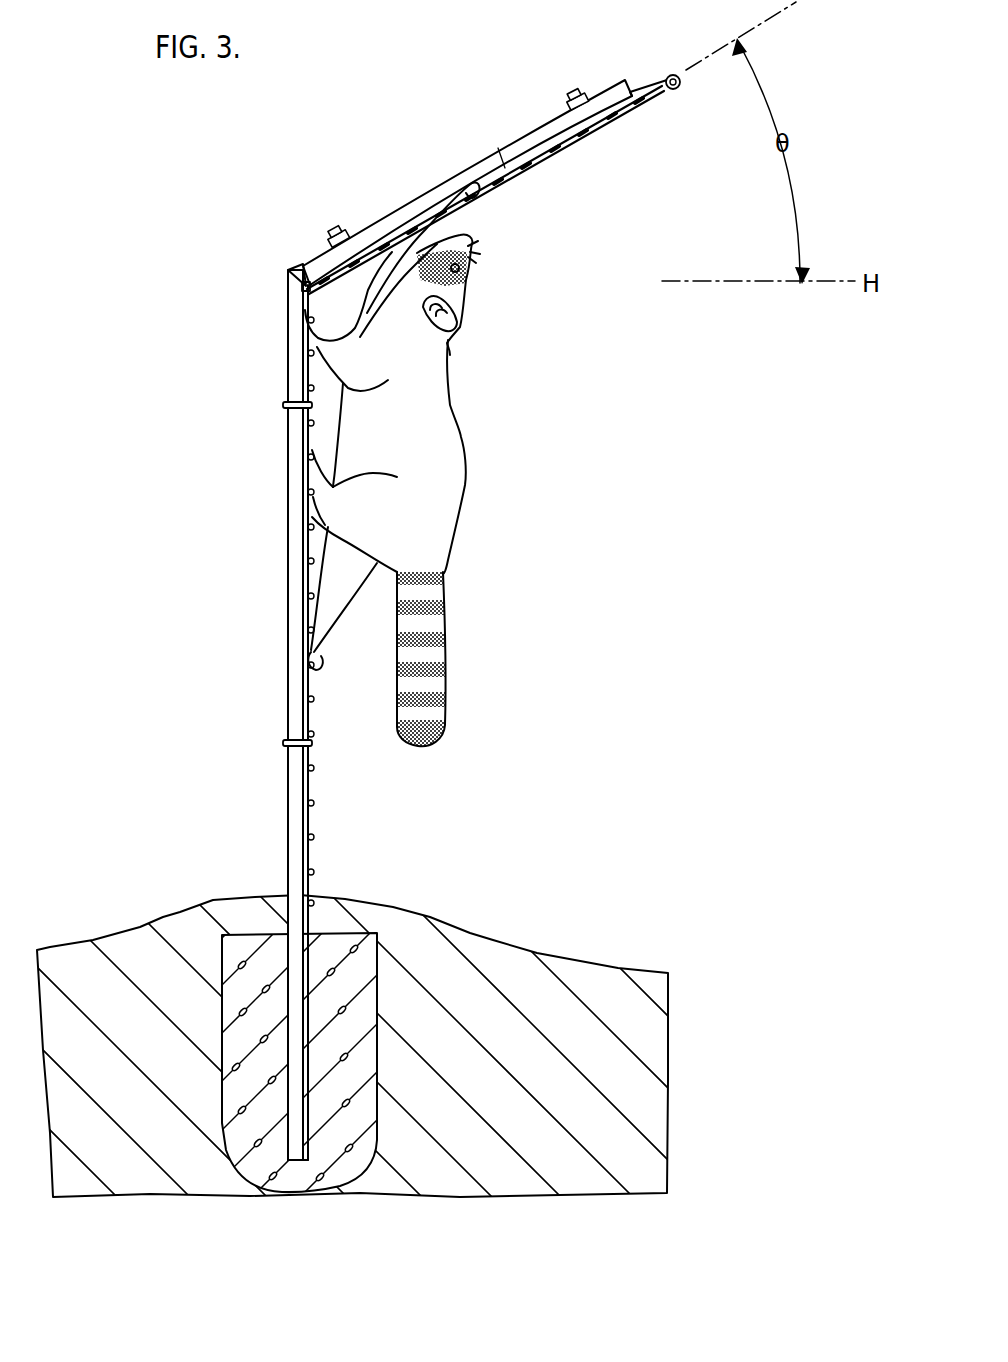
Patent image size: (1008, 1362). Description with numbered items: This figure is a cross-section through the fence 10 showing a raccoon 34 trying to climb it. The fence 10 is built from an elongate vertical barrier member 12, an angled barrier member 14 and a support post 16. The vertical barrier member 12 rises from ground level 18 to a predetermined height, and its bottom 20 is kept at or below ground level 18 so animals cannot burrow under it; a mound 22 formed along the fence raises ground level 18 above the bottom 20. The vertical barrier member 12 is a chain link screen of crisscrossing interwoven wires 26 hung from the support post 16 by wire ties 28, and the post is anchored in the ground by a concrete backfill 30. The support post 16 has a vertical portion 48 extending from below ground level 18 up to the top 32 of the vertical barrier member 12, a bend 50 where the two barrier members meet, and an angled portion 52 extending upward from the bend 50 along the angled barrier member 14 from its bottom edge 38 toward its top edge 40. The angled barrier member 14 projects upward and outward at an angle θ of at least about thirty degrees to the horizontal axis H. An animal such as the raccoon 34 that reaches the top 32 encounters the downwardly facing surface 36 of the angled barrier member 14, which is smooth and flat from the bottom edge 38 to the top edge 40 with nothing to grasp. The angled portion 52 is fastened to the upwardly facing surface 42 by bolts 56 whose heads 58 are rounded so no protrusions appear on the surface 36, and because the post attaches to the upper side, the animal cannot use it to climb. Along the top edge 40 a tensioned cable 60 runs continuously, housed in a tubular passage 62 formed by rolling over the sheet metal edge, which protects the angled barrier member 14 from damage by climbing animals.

The fence 10 is at (260, 342).
The vertical barrier member 12 is at (318, 798).
The angled barrier member 14 is at (485, 160).
The support post 16 is at (288, 587).
The ground level 18 is at (222, 898).
The bottom of vertical member 20 is at (318, 898).
The mound 22 is at (274, 893).
The interwoven wires 26 is at (314, 726).
The wire ties 28 is at (285, 405).
The concrete backfill 30 is at (378, 936).
The top of vertical barrier member 32 is at (300, 285).
The raccoon 34 is at (465, 437).
The downwardly facing surface 36 is at (538, 156).
The bottom edge 38 is at (305, 280).
The top edge 40 is at (670, 72).
The upwardly facing surface 42 is at (497, 150).
The vertical portion 48 is at (288, 500).
The bend 50 is at (290, 270).
The angled portion 52 is at (425, 185).
The bolts 56 is at (575, 90).
The bolt heads 58 is at (592, 118).
The tensioned cable 60 is at (677, 90).
The tubular passage 62 is at (682, 76).